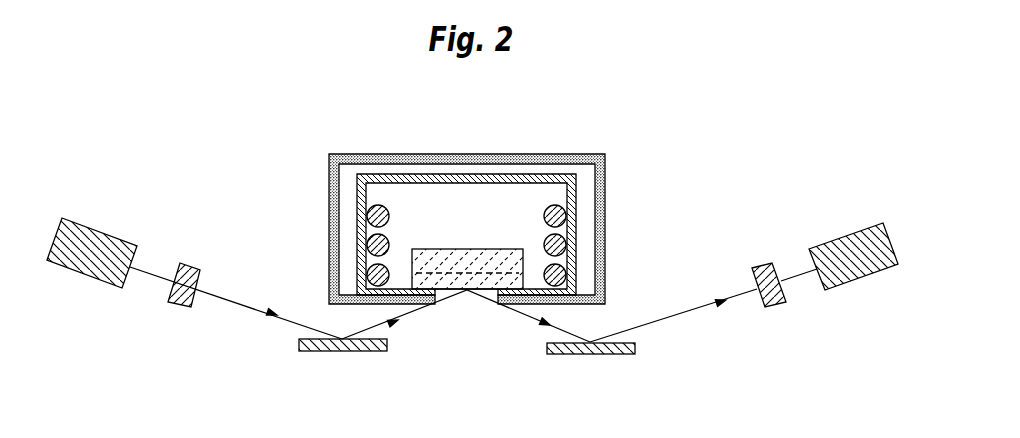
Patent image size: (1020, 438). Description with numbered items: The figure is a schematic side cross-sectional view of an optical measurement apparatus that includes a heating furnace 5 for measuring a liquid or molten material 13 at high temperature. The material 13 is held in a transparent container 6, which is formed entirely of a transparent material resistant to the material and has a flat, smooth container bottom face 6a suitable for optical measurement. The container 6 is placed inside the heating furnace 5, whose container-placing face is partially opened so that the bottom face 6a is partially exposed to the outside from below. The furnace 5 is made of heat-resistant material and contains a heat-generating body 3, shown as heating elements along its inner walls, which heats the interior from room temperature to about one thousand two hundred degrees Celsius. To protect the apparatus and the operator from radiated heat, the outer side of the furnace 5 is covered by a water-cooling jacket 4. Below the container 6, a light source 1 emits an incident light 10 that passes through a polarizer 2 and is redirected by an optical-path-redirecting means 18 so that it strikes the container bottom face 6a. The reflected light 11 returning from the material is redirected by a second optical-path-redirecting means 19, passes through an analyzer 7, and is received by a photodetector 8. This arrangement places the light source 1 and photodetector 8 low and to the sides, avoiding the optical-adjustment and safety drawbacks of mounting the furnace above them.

The light source 1 is at (87, 224).
The polarizer 2 is at (196, 265).
The heat-generating body 3 is at (379, 206).
The water-cooling jacket 4 is at (554, 162).
The heating furnace 5 is at (572, 197).
The transparent container 6 is at (526, 268).
The container bottom face 6a is at (487, 306).
The analyzer 7 is at (772, 308).
The photodetector 8 is at (848, 237).
The incident light 10 is at (233, 303).
The reflected light 11 is at (683, 315).
The liquid or molten material 13 is at (448, 280).
The optical-path-redirecting means 18 is at (363, 352).
The optical-path-redirecting means 19 is at (582, 355).